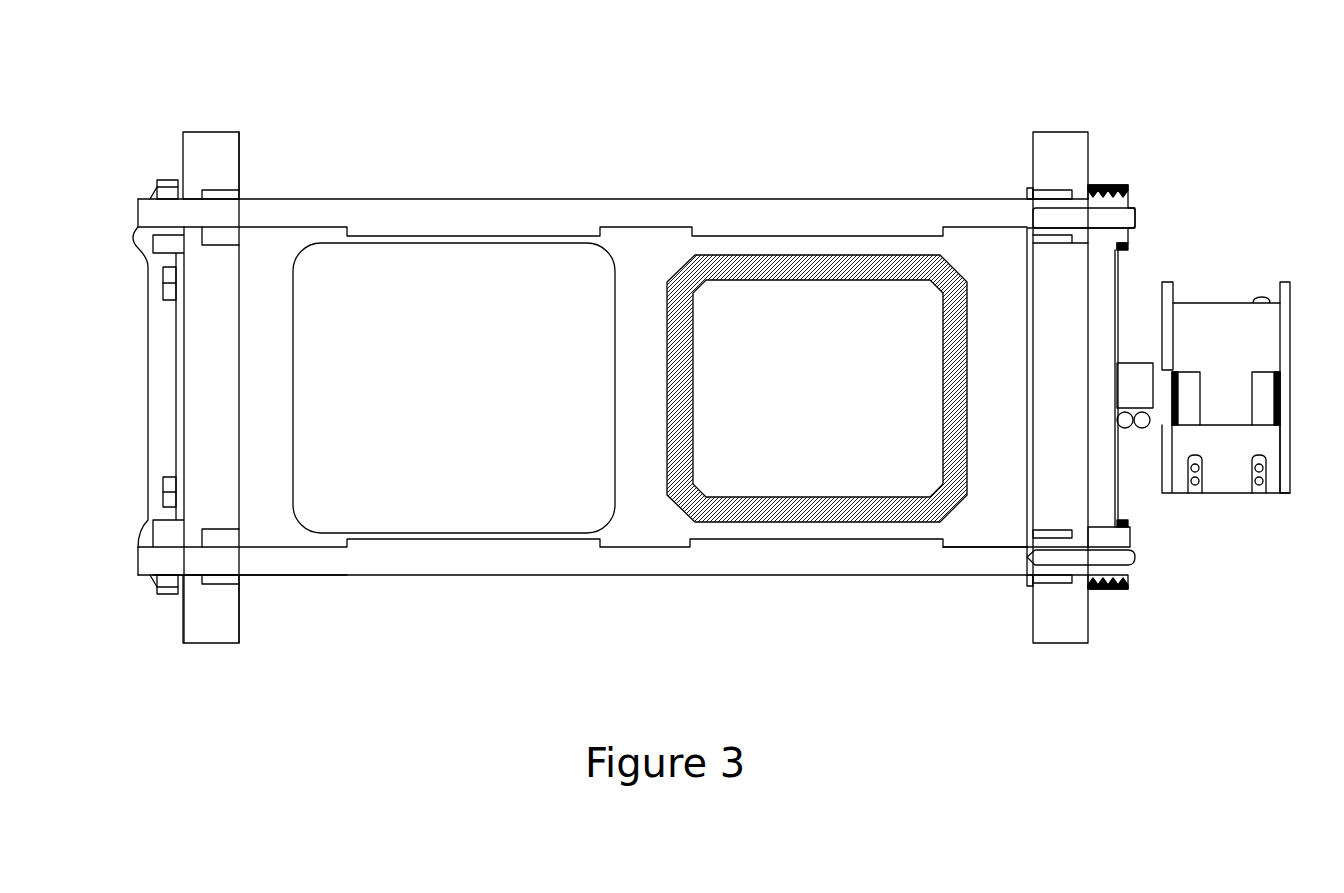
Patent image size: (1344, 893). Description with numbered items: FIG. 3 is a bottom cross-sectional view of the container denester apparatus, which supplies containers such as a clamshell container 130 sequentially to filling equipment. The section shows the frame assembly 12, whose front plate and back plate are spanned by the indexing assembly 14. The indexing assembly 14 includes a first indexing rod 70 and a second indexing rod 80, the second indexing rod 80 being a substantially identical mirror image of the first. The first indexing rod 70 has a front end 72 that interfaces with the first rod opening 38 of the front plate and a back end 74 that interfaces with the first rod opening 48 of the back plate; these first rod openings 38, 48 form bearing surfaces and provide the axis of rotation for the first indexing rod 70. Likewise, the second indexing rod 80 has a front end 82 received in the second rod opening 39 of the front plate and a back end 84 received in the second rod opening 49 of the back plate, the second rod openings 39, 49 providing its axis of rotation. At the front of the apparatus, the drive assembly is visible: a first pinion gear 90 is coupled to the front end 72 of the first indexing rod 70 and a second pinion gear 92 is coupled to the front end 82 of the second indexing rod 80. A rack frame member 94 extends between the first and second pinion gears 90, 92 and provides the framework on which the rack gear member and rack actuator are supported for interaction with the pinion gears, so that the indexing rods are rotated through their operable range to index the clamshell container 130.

The frame assembly 12 is at (1055, 132).
The indexing assembly 14 is at (781, 197).
The first rod opening 38 is at (1073, 199).
The second rod opening 39 is at (190, 195).
The first rod opening 48 is at (1073, 583).
The second rod opening 49 is at (190, 583).
The first indexing rod 70 is at (869, 197).
The front end 72 is at (1008, 180).
The back end 74 is at (226, 199).
The second indexing rod 80 is at (828, 580).
The front end 82 is at (1003, 580).
The back end 84 is at (293, 575).
The first pinion gear 90 is at (1128, 198).
The second pinion gear 92 is at (1130, 574).
The rack frame member 94 is at (1118, 497).
The clamshell container 130 is at (607, 253).